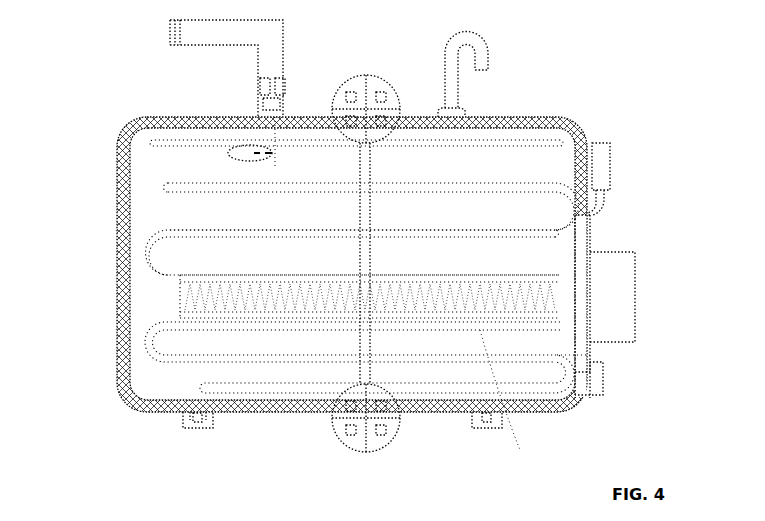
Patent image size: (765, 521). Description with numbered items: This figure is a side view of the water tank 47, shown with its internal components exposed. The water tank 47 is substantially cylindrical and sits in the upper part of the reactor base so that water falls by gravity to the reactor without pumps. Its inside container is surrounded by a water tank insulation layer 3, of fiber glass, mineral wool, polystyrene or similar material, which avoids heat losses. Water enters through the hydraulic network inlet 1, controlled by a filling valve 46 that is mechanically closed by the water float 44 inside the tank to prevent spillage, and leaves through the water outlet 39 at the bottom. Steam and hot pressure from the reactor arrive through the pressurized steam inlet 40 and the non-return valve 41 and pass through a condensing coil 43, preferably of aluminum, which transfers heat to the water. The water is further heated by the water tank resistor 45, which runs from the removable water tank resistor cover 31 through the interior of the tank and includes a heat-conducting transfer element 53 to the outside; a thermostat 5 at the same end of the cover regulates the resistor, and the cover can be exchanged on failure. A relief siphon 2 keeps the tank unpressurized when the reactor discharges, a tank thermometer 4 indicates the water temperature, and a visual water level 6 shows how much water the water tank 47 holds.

The hydraulic network inlet 1 is at (163, 32).
The relief siphon 2 is at (499, 45).
The water tank insulation layer 3 is at (590, 128).
The tank thermometer 4 is at (616, 160).
The thermostat 5 is at (611, 387).
The visual water level 6 is at (369, 203).
The water tank resistor cover 31 is at (637, 282).
The water outlet 39 is at (486, 433).
The pressurized steam inlet 40 is at (208, 433).
The non-return valve 41 is at (178, 418).
The condensing coil 43 is at (590, 355).
The water float 44 is at (212, 150).
The water tank resistor 45 is at (508, 401).
The filling valve 46 is at (287, 91).
The water tank 47 is at (98, 252).
The transfer element 53 is at (170, 305).